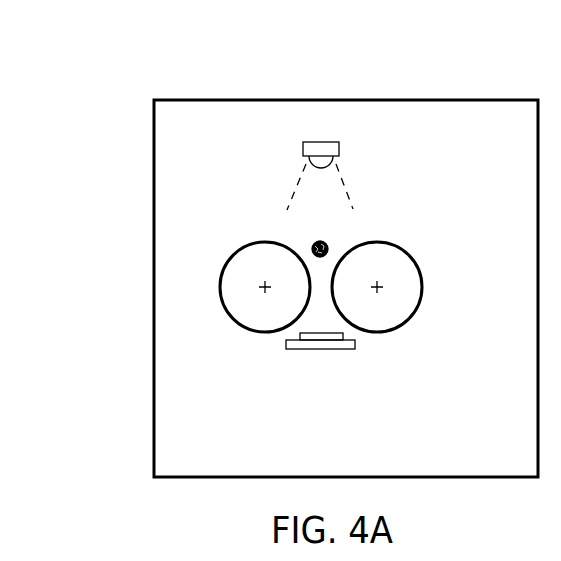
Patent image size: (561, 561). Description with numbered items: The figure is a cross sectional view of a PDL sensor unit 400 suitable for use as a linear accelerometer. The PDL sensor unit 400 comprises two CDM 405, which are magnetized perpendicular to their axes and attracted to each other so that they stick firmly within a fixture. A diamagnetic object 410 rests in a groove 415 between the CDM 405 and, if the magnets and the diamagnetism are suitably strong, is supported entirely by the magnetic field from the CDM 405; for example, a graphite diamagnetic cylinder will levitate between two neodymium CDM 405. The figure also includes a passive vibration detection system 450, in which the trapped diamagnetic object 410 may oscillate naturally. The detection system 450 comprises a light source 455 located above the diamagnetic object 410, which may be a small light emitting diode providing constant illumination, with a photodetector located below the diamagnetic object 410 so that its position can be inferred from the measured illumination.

The PDL sensor unit 400 is at (219, 133).
The CDM 405 is at (392, 272).
The diamagnetic object 410 is at (327, 243).
The groove 415 is at (294, 233).
The detection system 450 is at (292, 351).
The light source 455 is at (320, 148).